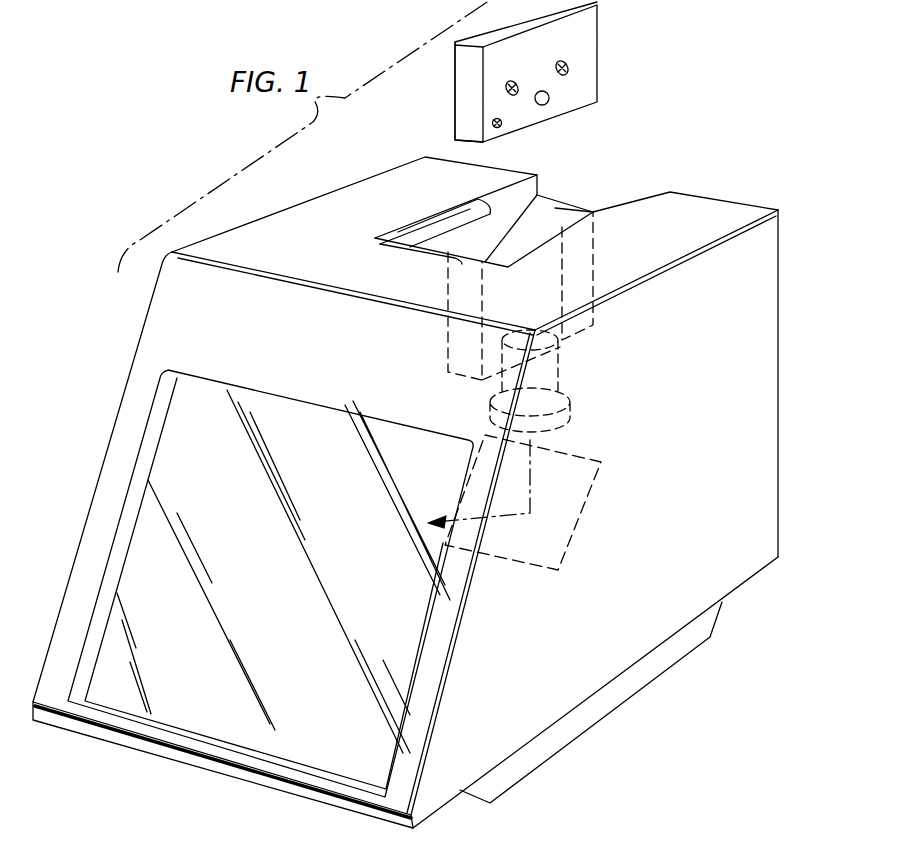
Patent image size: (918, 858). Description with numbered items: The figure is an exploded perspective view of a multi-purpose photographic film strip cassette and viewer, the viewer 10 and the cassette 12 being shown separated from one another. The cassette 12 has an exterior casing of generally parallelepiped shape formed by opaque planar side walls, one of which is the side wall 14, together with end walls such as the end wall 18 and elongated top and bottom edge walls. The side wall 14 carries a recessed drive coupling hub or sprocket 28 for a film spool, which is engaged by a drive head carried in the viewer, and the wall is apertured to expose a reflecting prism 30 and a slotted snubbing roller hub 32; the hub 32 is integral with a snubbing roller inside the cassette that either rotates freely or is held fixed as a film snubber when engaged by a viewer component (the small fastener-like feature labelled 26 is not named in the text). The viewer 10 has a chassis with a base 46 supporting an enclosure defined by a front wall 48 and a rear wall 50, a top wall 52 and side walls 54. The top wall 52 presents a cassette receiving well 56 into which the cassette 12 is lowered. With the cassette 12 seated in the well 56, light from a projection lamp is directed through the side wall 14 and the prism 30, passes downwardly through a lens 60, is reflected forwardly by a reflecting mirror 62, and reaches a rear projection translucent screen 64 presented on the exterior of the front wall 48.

The viewer 10 is at (788, 339).
The cassette 12 is at (599, 43).
The side wall 14 is at (590, 64).
The end wall 18 is at (468, 107).
The screw 26 is at (518, 85).
The drive coupling hub or sprocket 28 is at (570, 62).
The reflecting prism 30 is at (545, 105).
The slotted snubbing roller hub 32 is at (499, 128).
The base 46 is at (540, 748).
The front wall 48 is at (364, 367).
The rear wall 50 is at (780, 253).
The top wall 52 is at (666, 250).
The side walls 54 is at (684, 435).
The cassette receiving well 56 is at (574, 216).
The lens 60 is at (559, 378).
The reflecting mirror 62 is at (557, 530).
The rear projection translucent screen 64 is at (289, 622).